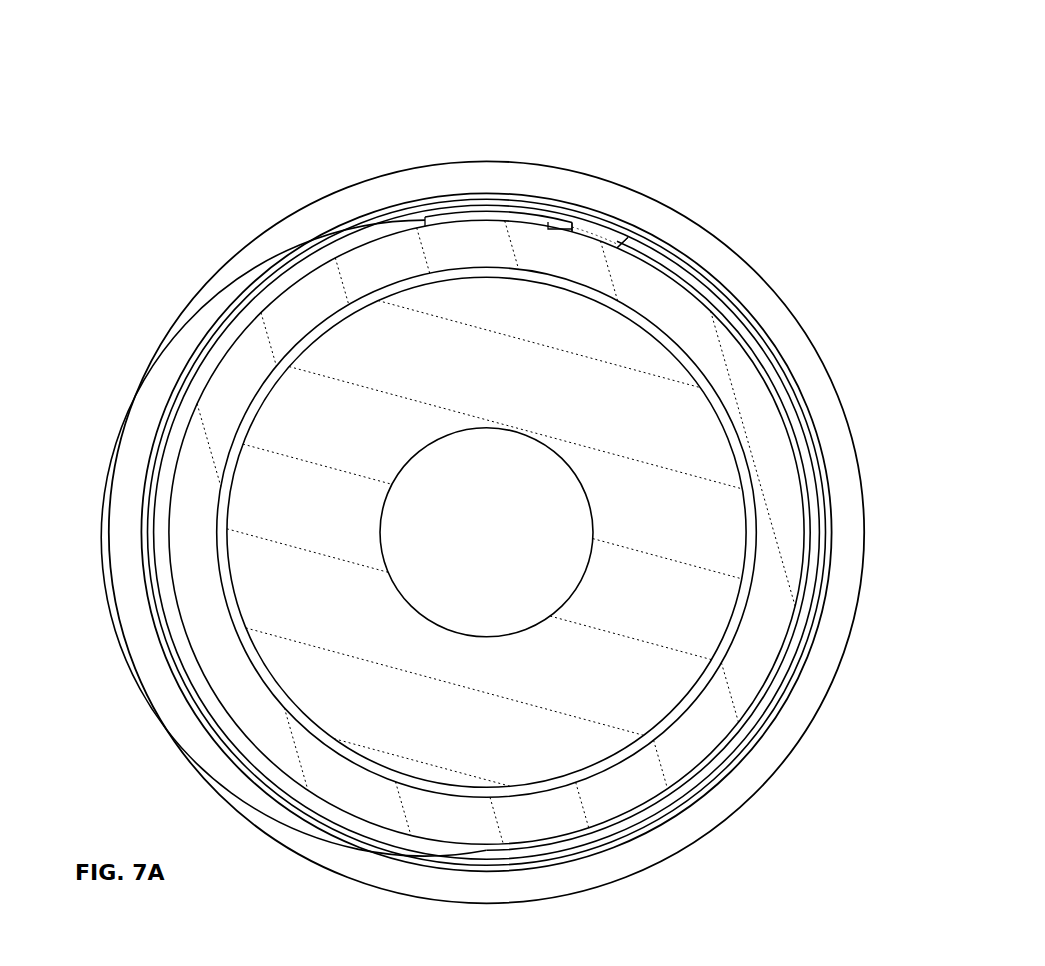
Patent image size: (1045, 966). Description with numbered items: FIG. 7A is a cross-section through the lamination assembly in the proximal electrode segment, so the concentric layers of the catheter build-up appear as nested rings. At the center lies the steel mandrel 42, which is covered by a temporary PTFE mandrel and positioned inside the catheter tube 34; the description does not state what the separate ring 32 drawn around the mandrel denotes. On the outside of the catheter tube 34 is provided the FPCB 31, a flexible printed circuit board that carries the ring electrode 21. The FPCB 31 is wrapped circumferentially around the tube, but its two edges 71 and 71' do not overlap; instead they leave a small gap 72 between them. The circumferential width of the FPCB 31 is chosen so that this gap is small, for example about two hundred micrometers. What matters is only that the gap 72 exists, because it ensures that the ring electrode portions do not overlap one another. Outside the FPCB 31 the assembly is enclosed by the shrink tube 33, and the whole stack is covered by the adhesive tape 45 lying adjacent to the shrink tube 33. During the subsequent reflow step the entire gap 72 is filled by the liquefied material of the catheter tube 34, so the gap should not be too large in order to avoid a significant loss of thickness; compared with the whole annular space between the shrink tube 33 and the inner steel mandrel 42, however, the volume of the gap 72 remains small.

The ring electrode 21 is at (223, 730).
The FPCB 31 is at (542, 217).
The inner ring 32 is at (248, 410).
The shrink tube 33 is at (320, 242).
The catheter tube 34 is at (673, 303).
The steel mandrel 42 is at (632, 710).
The adhesive tape 45 is at (820, 665).
The edge of the FPCB 71 is at (687, 177).
The edge of the FPCB 71' is at (602, 149).
The gap 72 is at (597, 232).